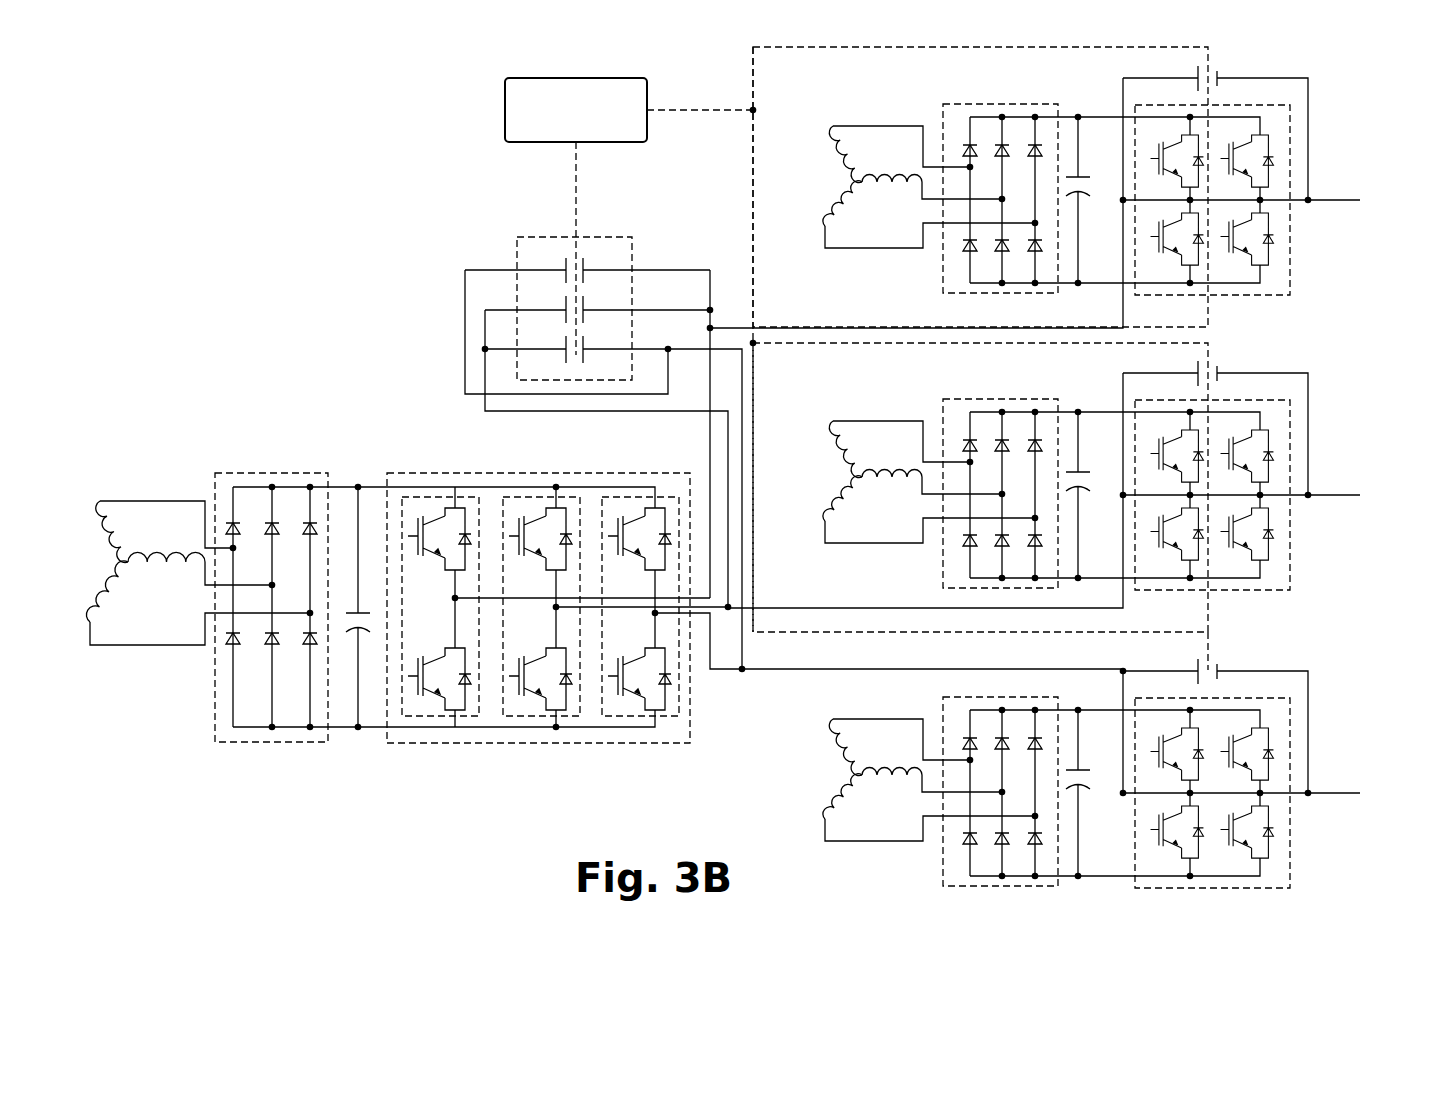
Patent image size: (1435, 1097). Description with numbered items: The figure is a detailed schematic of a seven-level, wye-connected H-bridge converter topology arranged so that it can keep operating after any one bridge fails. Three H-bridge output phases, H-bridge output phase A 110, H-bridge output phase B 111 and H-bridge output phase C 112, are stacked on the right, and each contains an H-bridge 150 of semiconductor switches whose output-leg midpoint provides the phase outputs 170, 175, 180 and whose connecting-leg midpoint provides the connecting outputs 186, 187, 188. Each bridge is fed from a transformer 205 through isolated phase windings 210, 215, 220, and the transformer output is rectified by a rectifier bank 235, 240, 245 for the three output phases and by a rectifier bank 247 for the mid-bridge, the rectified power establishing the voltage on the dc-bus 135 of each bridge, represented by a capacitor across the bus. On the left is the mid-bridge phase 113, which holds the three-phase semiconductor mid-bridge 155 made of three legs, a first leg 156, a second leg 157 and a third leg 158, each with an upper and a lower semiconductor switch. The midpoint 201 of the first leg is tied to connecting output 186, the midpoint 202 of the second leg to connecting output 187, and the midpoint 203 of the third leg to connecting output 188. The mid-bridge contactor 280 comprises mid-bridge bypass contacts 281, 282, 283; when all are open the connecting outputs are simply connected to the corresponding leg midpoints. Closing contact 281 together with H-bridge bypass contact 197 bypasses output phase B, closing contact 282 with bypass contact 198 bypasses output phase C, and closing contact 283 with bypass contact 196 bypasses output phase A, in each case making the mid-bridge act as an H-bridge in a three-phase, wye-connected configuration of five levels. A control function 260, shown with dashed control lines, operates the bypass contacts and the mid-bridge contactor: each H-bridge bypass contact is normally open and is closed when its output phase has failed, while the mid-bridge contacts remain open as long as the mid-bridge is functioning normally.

The H-bridge output phase A 110 is at (1057, 79).
The H-bridge output phase B 111 is at (1057, 374).
The H-bridge output phase C 112 is at (1057, 667).
The mid-bridge phase 113 is at (430, 452).
The dc-bus 135 is at (358, 485).
The H-bridge 150 is at (1228, 104).
The three-phase semiconductor mid-bridge 155 is at (655, 470).
The leg 1 156 is at (420, 497).
The leg 2 157 is at (520, 497).
The leg 3 158 is at (615, 497).
The phase output 170 is at (1333, 200).
The phase output 175 is at (1333, 495).
The phase output 180 is at (1333, 793).
The connecting output 186 is at (1123, 322).
The connecting output 187 is at (1123, 602).
The connecting output 188 is at (1123, 788).
The H-bridge bypass contact 196 is at (1220, 78).
The H-bridge bypass contact 197 is at (1220, 373).
The H-bridge bypass contact 198 is at (1220, 671).
The midpoint 201 is at (455, 598).
The midpoint 202 is at (556, 607).
The midpoint 203 is at (655, 613).
The transformer 205 is at (100, 501).
The isolated phase winding 210 is at (112, 556).
The isolated phase winding 215 is at (180, 548).
The isolated phase winding 220 is at (112, 604).
The rectifier bank 235 is at (1003, 104).
The rectifier bank 240 is at (1003, 399).
The rectifier bank 245 is at (1003, 697).
The rectifier bank 247 is at (283, 473).
The control function 260 is at (560, 78).
The mid-bridge contactor 280 is at (633, 262).
The mid-bridge bypass contact 281 is at (566, 270).
The mid-bridge bypass contact 282 is at (566, 310).
The mid-bridge bypass contact 283 is at (566, 349).